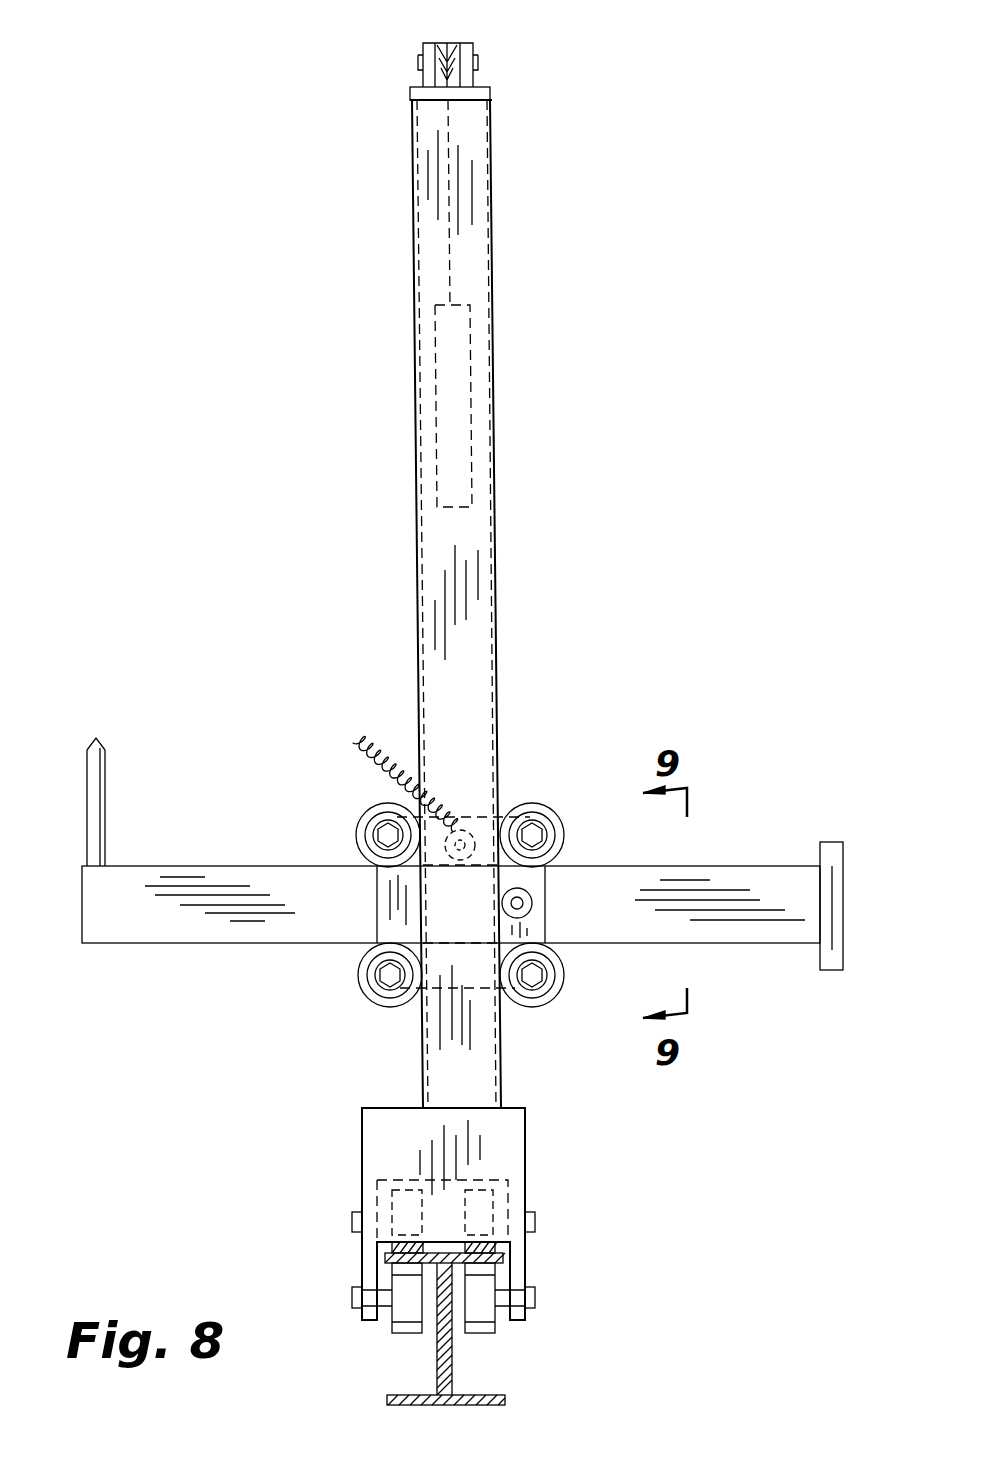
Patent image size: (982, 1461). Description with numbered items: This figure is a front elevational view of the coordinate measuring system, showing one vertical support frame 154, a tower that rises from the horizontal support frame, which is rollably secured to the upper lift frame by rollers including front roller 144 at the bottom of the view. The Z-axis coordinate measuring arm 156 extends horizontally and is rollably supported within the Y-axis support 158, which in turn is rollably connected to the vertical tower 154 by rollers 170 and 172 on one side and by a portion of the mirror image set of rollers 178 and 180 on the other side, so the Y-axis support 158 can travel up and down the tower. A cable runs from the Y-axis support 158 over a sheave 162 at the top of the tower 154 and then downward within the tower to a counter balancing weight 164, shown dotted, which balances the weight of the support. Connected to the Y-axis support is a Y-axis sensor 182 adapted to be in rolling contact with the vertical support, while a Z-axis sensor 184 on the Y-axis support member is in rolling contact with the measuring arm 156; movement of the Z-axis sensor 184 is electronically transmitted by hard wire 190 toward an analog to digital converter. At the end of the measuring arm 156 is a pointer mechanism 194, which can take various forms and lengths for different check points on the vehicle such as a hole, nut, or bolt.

The front roller 144 is at (482, 1335).
The vertical support frame 154 is at (483, 572).
The Z-axis coordinate measuring arm 156 is at (158, 945).
The Y-axis support 158 is at (548, 918).
The sheave 162 is at (454, 42).
The counter balancing weight 164 is at (459, 392).
The roller 170 is at (564, 822).
The roller 172 is at (536, 1008).
The roller 178 is at (356, 828).
The roller 180 is at (358, 975).
The Y-axis sensor 182 is at (542, 902).
The Z-axis sensor 184 is at (466, 830).
The hard wire 190 is at (357, 736).
The pointer mechanism 194 is at (104, 762).